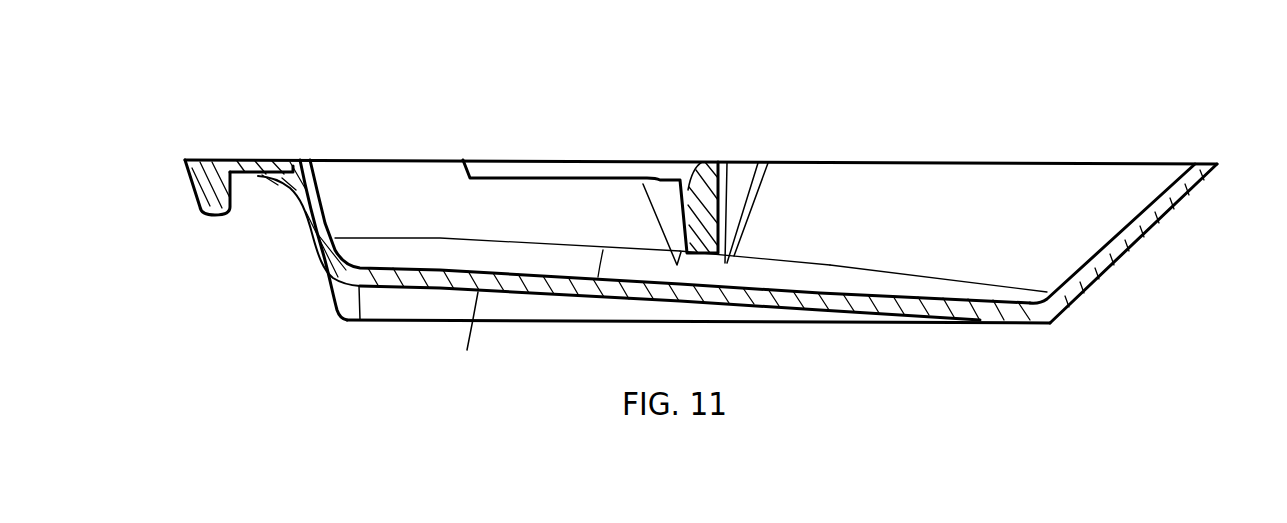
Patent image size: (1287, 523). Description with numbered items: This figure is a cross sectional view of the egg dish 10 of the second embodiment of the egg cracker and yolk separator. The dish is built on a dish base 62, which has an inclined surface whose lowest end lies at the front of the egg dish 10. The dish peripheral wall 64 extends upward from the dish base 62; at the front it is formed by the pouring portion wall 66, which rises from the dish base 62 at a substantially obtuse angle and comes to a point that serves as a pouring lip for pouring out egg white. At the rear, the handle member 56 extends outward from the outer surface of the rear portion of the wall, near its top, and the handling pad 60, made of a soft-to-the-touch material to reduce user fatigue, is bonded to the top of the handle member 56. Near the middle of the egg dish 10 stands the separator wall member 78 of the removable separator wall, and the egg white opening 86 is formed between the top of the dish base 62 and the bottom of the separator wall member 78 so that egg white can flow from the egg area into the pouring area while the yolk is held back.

The egg dish 10 is at (915, 118).
The handle member 56 is at (264, 178).
The handling pad 60 is at (200, 188).
The dish base 62 is at (670, 276).
The dish peripheral wall 64 is at (1010, 242).
The pouring portion wall 66 is at (1198, 165).
The separator wall member 78 is at (727, 162).
The egg white opening 86 is at (715, 272).